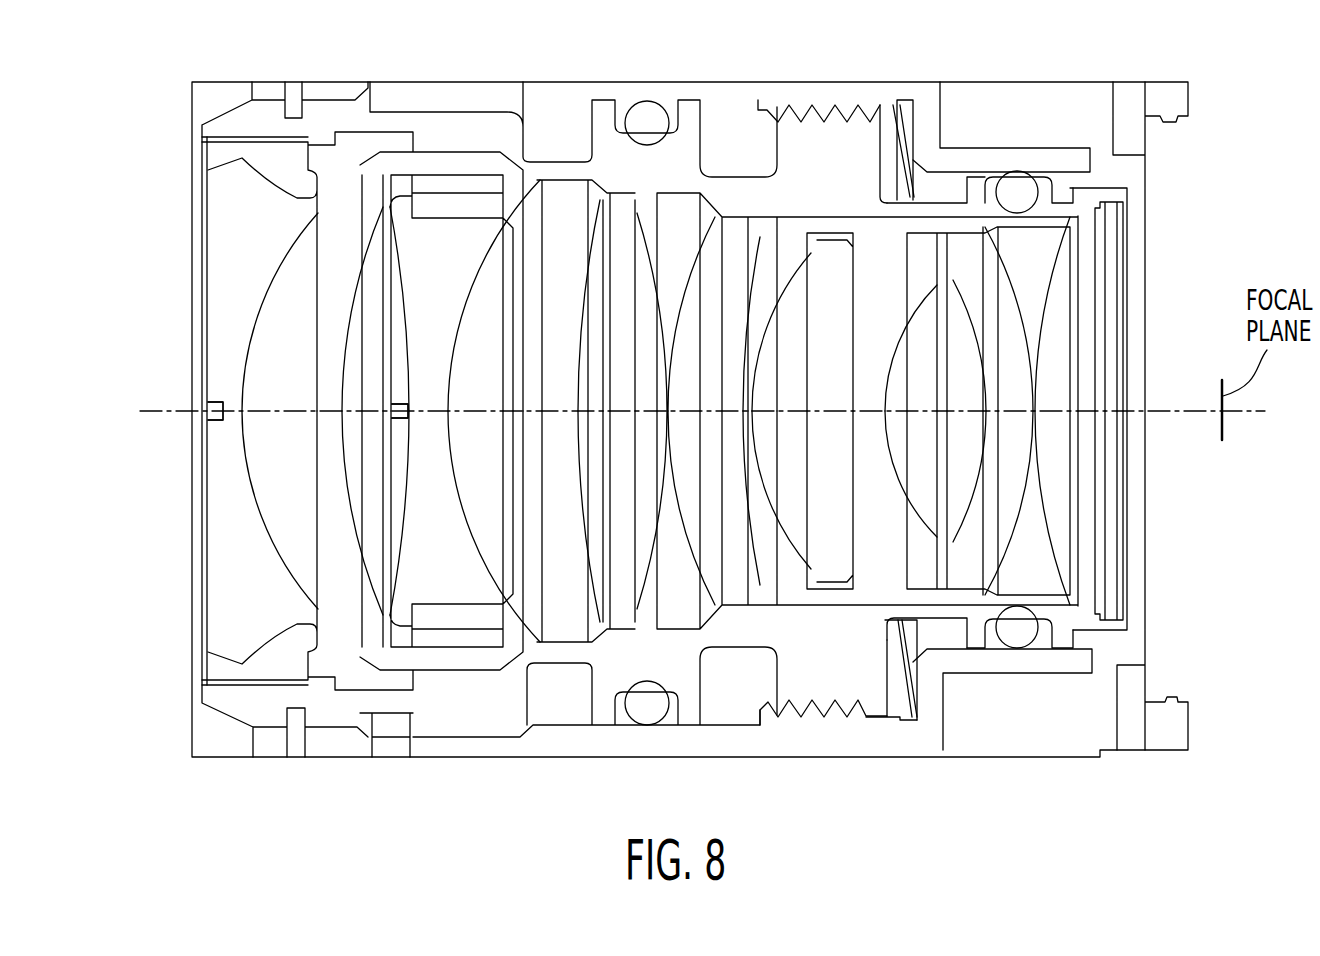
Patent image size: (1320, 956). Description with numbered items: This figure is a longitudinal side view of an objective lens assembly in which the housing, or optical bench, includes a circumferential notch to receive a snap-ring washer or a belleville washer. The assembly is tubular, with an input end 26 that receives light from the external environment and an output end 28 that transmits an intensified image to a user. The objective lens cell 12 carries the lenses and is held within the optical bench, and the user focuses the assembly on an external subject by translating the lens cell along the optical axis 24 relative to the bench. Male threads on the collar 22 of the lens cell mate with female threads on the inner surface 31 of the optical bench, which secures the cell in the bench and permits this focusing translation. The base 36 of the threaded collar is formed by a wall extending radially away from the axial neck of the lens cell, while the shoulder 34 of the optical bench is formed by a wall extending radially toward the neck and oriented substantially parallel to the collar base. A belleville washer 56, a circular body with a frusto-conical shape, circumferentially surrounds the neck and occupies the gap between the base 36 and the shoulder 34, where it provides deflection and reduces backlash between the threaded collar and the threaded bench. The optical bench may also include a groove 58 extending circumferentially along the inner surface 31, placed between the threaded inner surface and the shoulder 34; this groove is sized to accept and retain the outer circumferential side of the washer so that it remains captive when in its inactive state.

The objective lens cell 12 is at (738, 696).
The collar 22 is at (832, 140).
The optical axis 24 is at (1168, 405).
The input end 26 is at (200, 276).
The output end 28 is at (1140, 605).
The inner surface 31 is at (889, 720).
The shoulder 34 is at (920, 700).
The base 36 is at (885, 643).
The belleville washer 56 is at (915, 720).
The groove 58 is at (907, 695).